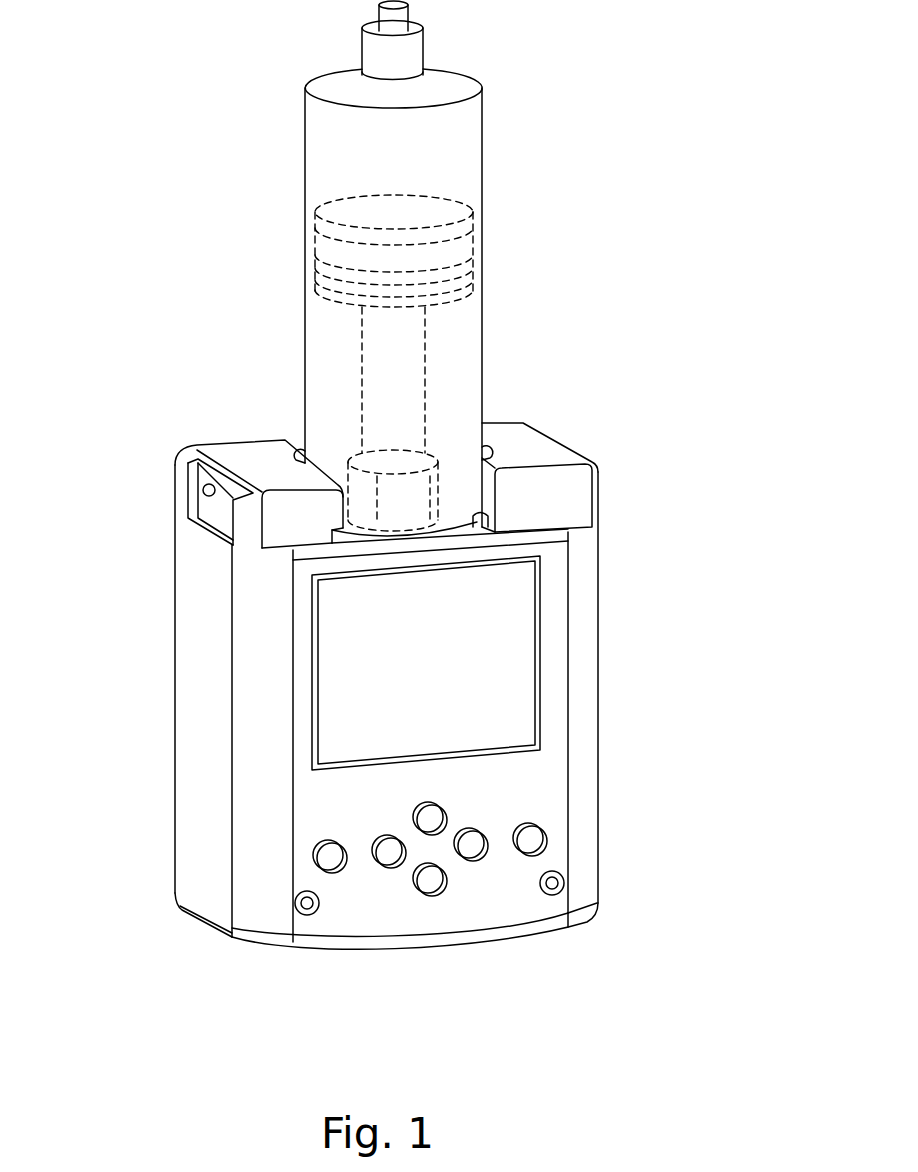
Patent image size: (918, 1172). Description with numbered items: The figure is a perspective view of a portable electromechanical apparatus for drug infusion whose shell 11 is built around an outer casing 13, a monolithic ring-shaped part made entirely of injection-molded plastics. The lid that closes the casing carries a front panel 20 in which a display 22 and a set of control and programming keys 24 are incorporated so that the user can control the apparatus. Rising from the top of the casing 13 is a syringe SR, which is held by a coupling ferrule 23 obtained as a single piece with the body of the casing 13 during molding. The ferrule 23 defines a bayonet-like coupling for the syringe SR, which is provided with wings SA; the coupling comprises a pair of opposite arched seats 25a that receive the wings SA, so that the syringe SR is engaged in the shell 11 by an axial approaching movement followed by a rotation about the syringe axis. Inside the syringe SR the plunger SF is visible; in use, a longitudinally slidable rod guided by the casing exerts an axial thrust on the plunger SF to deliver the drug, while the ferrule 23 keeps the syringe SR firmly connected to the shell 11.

The shell 11 is at (110, 928).
The outer casing 13 is at (616, 677).
The front panel 20 is at (552, 792).
The display 22 is at (313, 697).
The coupling ferrule 23 is at (580, 498).
The set of control and programming keys 24 is at (413, 879).
The arched seats 25a is at (341, 534).
The wings SA is at (481, 517).
The plunger SF is at (383, 215).
The syringe SR is at (482, 170).